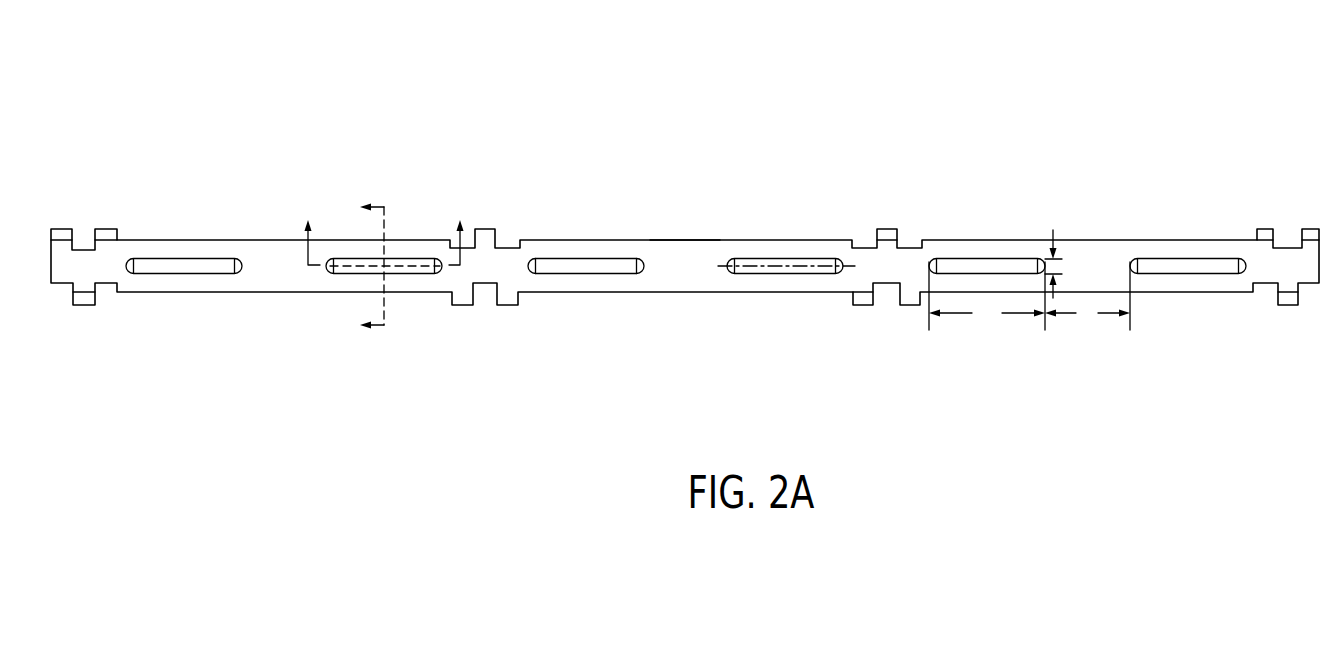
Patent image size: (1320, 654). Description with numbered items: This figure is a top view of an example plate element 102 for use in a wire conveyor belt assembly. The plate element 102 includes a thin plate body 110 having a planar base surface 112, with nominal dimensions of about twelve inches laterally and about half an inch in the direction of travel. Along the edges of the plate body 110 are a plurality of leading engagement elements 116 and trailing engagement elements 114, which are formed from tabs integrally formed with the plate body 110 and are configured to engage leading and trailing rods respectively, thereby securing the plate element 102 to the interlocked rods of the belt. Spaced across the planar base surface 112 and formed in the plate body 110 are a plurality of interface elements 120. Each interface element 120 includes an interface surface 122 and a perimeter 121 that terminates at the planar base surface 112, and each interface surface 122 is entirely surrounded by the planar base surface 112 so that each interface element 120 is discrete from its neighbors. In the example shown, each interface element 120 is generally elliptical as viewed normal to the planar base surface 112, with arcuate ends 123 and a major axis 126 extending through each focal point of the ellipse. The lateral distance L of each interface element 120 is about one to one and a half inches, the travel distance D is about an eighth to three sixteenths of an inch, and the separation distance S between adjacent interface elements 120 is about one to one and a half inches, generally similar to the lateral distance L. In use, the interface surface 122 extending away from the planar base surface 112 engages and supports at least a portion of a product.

The plate element 102 is at (256, 96).
The plate body 110 is at (955, 240).
The planar base surface 112 is at (692, 265).
The trailing engagement elements 114 is at (863, 301).
The leading engagement elements 116 is at (886, 231).
The interface elements 120 is at (543, 258).
The perimeter 121 is at (560, 276).
The interface surface 122 is at (601, 264).
The arcuate ends 123 is at (530, 262).
The major axis 126 is at (846, 267).